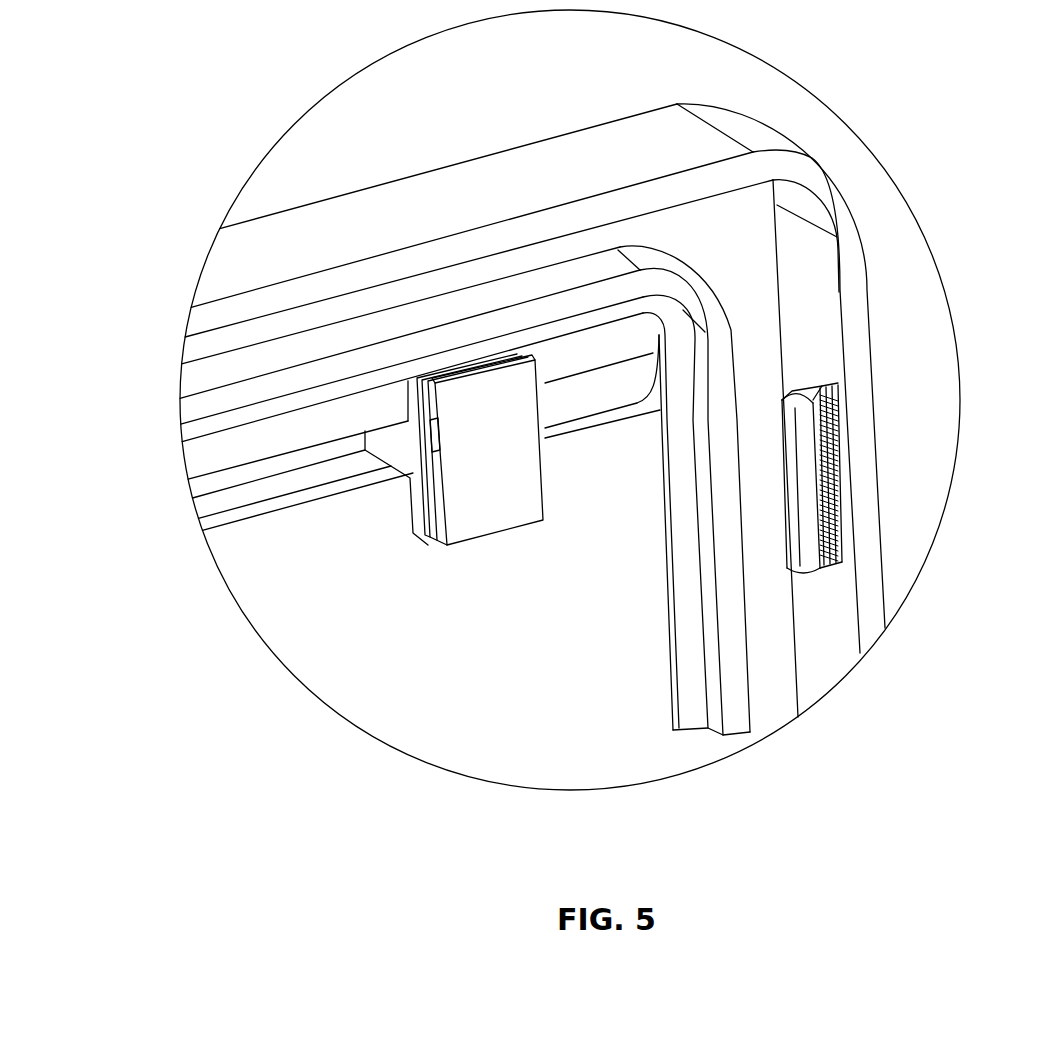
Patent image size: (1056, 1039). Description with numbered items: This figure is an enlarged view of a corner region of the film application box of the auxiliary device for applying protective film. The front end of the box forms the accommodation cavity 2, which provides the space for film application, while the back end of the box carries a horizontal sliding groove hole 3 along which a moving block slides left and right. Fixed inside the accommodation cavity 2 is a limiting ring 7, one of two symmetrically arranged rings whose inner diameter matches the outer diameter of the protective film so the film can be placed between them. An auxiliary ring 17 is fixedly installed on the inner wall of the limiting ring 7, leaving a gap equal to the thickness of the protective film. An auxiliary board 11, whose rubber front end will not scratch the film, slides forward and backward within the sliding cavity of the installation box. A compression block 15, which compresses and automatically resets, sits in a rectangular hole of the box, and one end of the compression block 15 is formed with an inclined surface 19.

The accommodation cavity 2 is at (751, 282).
The sliding groove hole 3 is at (273, 443).
The limiting ring 7 is at (742, 610).
The auxiliary board 11 is at (452, 459).
The compression block 15 is at (840, 431).
The auxiliary ring 17 is at (693, 656).
The inclined surface 19 is at (812, 538).